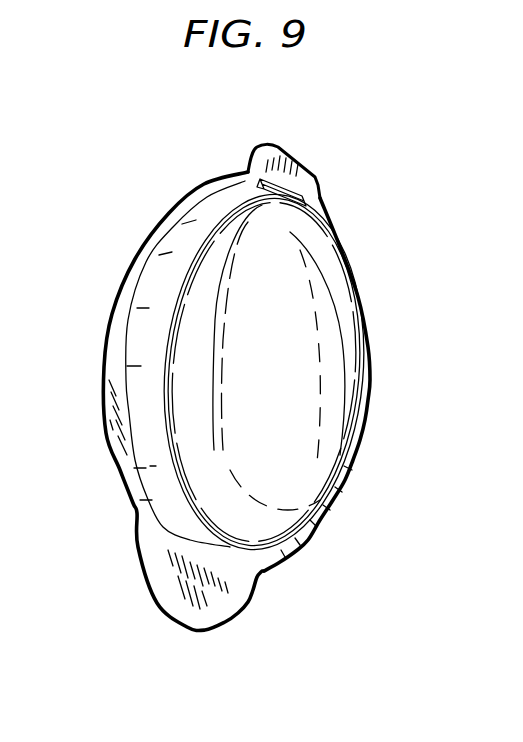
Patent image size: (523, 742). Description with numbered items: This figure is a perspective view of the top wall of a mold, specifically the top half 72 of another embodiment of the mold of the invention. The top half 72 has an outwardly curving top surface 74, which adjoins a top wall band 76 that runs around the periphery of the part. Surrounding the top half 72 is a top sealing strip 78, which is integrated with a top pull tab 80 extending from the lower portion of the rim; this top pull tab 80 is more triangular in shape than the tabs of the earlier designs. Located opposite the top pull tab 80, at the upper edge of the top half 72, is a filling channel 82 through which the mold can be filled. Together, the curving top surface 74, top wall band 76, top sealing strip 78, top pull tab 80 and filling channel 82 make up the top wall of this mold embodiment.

The top half 72 is at (270, 368).
The outwardly curving top surface 74 is at (188, 397).
The top wall band 76 is at (146, 356).
The top sealing strip 78 is at (153, 245).
The top pull tab 80 is at (205, 598).
The filling channel 82 is at (284, 189).